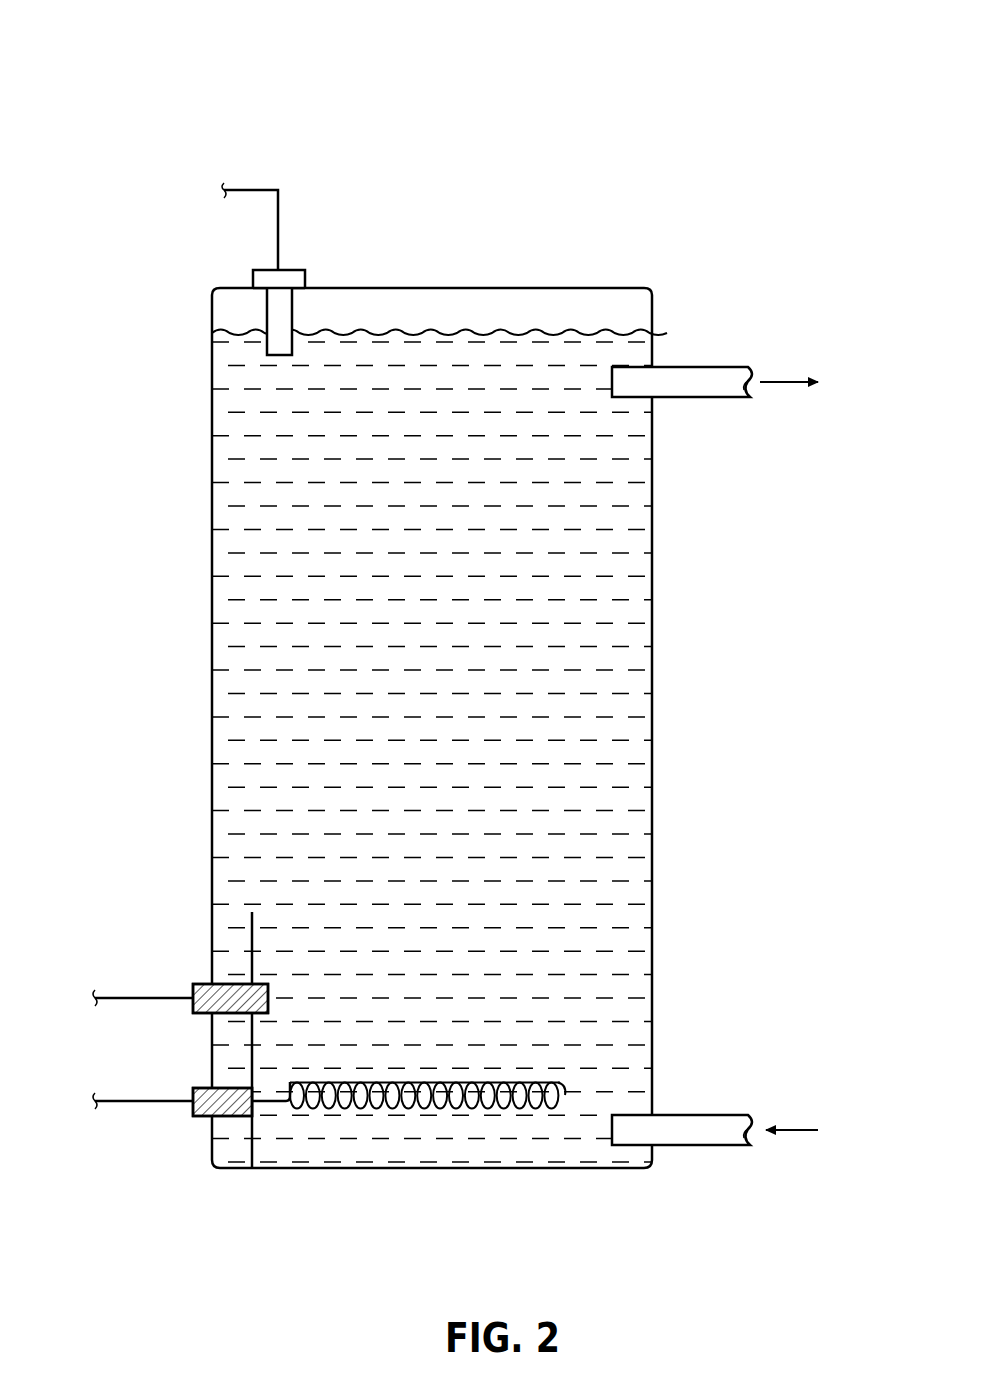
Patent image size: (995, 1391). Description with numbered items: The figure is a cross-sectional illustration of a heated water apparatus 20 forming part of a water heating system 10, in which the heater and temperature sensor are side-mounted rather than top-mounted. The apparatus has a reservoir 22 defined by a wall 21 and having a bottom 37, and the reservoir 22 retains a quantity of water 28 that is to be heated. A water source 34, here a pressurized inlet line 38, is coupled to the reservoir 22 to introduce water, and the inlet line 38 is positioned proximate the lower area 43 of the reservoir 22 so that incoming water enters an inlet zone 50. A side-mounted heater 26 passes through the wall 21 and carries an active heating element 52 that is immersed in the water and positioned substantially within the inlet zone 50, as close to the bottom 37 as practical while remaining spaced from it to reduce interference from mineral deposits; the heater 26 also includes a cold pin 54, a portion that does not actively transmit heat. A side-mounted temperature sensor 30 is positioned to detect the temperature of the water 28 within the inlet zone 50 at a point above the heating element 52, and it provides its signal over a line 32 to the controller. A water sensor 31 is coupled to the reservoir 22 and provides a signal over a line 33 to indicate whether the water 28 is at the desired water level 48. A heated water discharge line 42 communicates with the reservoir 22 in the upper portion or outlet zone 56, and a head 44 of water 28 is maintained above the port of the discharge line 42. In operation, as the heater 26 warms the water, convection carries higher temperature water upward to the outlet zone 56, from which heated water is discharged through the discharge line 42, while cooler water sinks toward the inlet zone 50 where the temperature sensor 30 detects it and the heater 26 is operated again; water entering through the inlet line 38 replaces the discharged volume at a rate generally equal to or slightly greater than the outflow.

The water heating system 10 is at (152, 50).
The heated water apparatus 20 is at (481, 701).
The wall 21 is at (210, 742).
The reservoir 22 is at (655, 742).
The heater 26 is at (329, 1146).
The water 28 is at (452, 641).
The temperature sensor 30 is at (205, 985).
The water sensor 31 is at (290, 272).
The line 32 is at (178, 996).
The line 33 is at (250, 188).
The water source 34 is at (798, 1130).
The bottom 37 is at (410, 1166).
The inlet line 38 is at (670, 1113).
The heated water discharge line 42 is at (685, 368).
The lower area 43 is at (603, 967).
The head 44 is at (617, 348).
The water level 48 is at (512, 333).
The inlet zone 50 is at (252, 958).
The active heating element 52 is at (432, 1082).
The cold pin 54 is at (205, 1118).
The outlet zone 56 is at (603, 465).